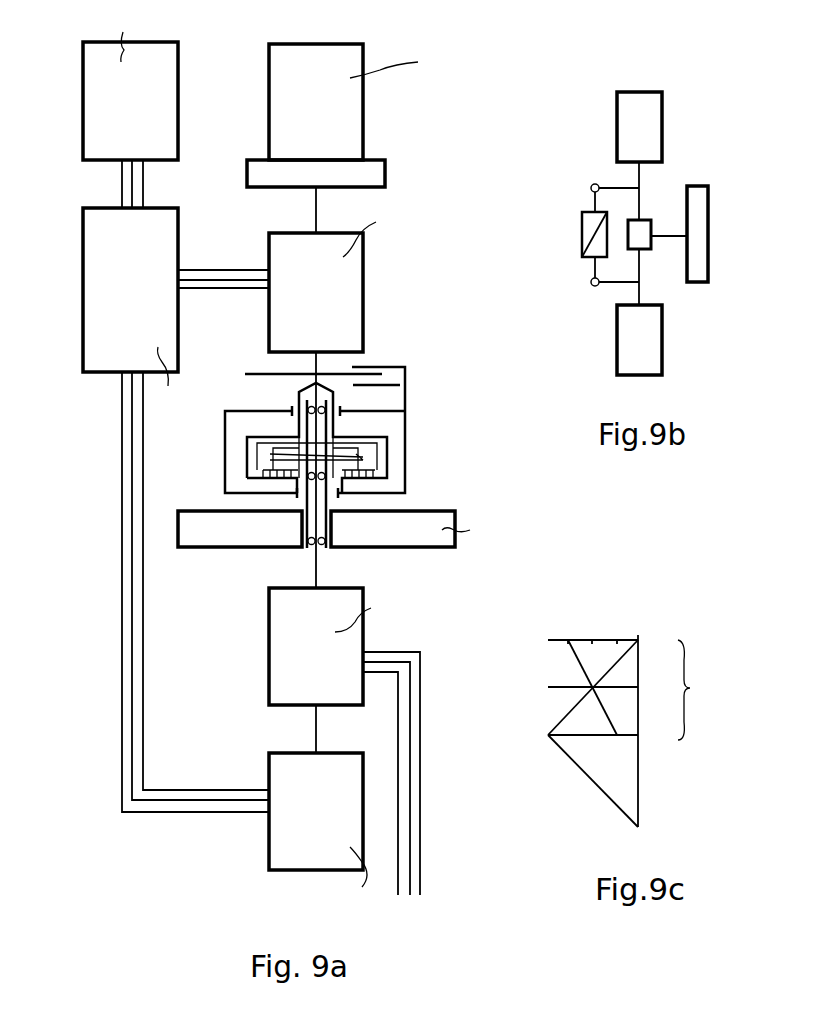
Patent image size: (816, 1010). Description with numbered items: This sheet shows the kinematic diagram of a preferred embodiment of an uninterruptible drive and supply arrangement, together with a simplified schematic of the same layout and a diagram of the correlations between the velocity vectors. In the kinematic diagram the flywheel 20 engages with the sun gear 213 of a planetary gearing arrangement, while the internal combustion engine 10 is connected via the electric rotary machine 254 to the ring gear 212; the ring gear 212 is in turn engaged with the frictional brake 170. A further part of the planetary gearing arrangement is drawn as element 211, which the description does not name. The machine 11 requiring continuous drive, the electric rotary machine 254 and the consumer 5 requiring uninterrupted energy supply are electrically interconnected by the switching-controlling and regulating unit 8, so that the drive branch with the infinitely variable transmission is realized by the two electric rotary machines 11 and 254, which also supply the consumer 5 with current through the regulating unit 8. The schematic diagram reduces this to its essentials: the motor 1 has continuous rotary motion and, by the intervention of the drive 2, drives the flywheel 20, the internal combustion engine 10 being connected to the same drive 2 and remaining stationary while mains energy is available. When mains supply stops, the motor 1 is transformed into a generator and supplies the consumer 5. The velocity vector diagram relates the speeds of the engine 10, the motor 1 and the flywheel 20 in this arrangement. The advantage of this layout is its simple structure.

In FIG. 9a, the consumer 5 is at (98, 92).
In FIG. 9a, the switching-controlling and regulating unit 8 is at (98, 300).
In FIG. 9a, the internal combustion engine 10 is at (352, 100).
In FIG. 9b, the internal combustion engine 10 is at (650, 130).
In FIG. 9c, the internal combustion engine 10 is at (608, 681).
In FIG. 9a, the electric rotary machine 254 is at (352, 277).
In FIG. 9a, the frictional brake 170 is at (400, 370).
In FIG. 9a, the ring gear 212 is at (365, 437).
In FIG. 9a, the coupling disc 211 is at (352, 457).
In FIG. 9a, the sun gear 213 is at (340, 480).
In FIG. 9a, the flywheel 20 is at (407, 537).
In FIG. 9b, the flywheel 20 is at (700, 208).
In FIG. 9c, the flywheel 20 is at (608, 734).
In FIG. 9a, the motor 1 is at (279, 628).
In FIG. 9b, the motor 1 is at (652, 343).
In FIG. 9c, the motor 1 is at (608, 687).
In FIG. 9a, the machine requiring continuous drive 11 is at (285, 845).
In FIG. 9b, the drive 2 is at (643, 230).